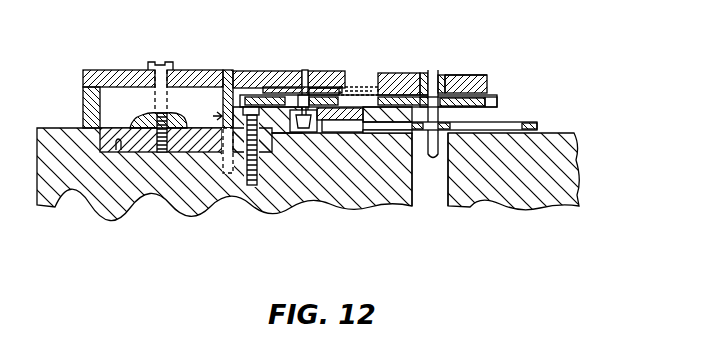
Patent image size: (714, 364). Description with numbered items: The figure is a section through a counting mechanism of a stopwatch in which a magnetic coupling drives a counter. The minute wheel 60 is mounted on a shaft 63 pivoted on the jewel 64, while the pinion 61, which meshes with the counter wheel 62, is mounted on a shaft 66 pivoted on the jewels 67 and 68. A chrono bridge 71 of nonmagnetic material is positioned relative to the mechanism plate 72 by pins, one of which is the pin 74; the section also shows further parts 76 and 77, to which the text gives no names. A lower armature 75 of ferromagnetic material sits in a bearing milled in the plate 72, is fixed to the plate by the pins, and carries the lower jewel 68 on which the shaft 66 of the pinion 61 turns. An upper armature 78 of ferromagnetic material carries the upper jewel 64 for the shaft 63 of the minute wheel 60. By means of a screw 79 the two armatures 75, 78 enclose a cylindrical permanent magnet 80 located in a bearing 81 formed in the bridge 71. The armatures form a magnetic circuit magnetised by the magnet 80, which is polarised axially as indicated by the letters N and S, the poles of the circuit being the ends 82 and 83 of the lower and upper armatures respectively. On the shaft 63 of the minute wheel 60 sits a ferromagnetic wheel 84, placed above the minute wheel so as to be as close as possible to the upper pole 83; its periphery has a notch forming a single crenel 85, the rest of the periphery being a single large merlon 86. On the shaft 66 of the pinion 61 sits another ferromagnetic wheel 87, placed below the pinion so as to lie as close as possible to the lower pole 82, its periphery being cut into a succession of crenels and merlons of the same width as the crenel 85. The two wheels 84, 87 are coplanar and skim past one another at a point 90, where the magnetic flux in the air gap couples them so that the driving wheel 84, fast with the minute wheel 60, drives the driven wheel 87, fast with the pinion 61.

The minute wheel 60 is at (540, 126).
The pinion 61 is at (328, 87).
The counter wheel 62 is at (365, 86).
The shaft 63 is at (434, 70).
The jewel 64 is at (450, 74).
The shaft 66 is at (311, 86).
The jewel 67 is at (303, 70).
The lower jewel 68 is at (299, 133).
The chrono bridge 71 is at (256, 70).
The mechanism plate 72 is at (63, 198).
The pin 74 is at (230, 70).
The lower armature 75 is at (185, 130).
The insert plate 76 is at (127, 140).
The screw 77 is at (251, 186).
The upper armature 78 is at (190, 70).
The screw 79 is at (157, 62).
The permanent magnet 80 is at (112, 68).
The bearing 81 is at (213, 116).
The end of lower armature 82 is at (363, 130).
The end of upper armature 83 is at (486, 76).
The ferromagnetic wheel 84 is at (420, 112).
The crenel 85 is at (497, 98).
The merlon 86 is at (382, 133).
The ferromagnetic wheel 87 is at (284, 133).
The point 90 is at (375, 105).